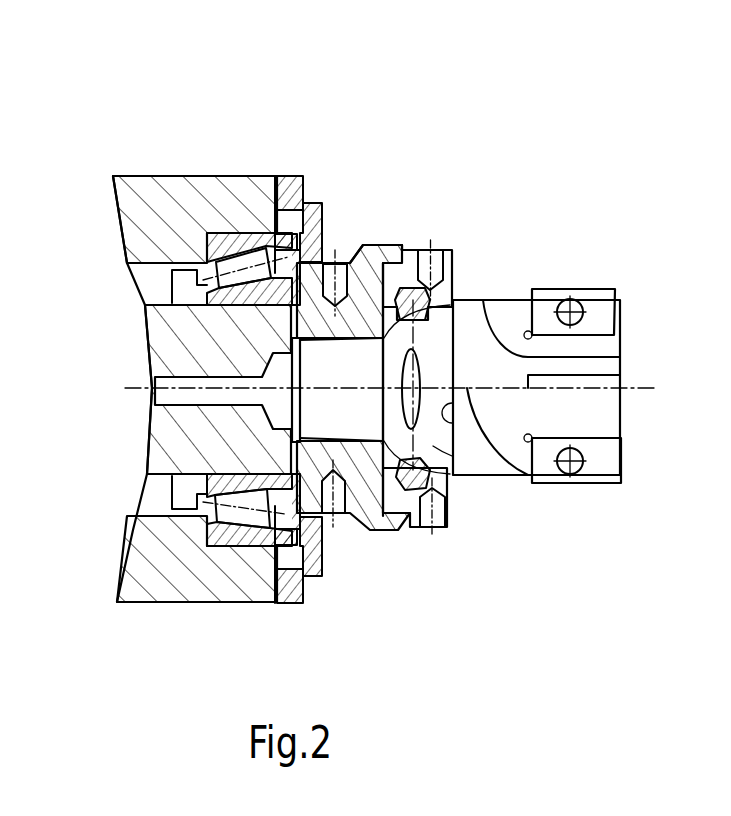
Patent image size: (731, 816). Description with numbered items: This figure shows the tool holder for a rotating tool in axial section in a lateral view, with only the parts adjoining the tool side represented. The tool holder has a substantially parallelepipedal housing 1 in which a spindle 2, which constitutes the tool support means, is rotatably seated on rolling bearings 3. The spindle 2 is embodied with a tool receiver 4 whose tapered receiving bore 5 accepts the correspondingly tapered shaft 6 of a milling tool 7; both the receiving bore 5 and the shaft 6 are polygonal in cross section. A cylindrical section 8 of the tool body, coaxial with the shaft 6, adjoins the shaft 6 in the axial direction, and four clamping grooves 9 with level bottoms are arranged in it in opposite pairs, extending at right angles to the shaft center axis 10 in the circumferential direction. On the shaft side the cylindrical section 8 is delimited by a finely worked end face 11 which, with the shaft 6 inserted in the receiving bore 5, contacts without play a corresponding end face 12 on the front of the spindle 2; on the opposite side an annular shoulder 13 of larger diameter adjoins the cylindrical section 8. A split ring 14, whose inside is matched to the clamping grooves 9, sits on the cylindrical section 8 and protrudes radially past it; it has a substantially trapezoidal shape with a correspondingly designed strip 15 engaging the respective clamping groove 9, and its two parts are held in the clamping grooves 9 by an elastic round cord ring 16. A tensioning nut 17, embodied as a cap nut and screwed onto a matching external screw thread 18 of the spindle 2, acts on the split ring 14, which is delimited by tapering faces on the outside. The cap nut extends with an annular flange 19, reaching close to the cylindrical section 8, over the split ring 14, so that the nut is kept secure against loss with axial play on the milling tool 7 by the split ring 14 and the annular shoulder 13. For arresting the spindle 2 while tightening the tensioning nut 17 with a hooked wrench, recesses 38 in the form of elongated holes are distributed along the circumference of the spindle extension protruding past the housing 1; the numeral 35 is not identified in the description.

The housing 1 is at (178, 192).
The spindle 2 is at (158, 328).
The rolling bearings 3 is at (242, 233).
The tool receiver 4 is at (344, 318).
The receiving bore 5 is at (472, 323).
The shaft 6 is at (342, 386).
The milling tool 7 is at (490, 298).
The cylindrical section 8 is at (433, 446).
The clamping grooves 9 is at (418, 375).
The shaft center axis 10 is at (657, 383).
The end face 11 is at (420, 522).
The end face 12 is at (408, 290).
The annular shoulder 13 is at (457, 434).
The split ring 14 is at (406, 492).
The strip 15 is at (407, 455).
The round cord ring 16 is at (433, 262).
The tensioning nut 17 is at (363, 236).
The external screw thread 18 is at (345, 535).
The annular flange 19 is at (460, 478).
The screw 35 is at (323, 263).
The recesses 38 is at (340, 258).